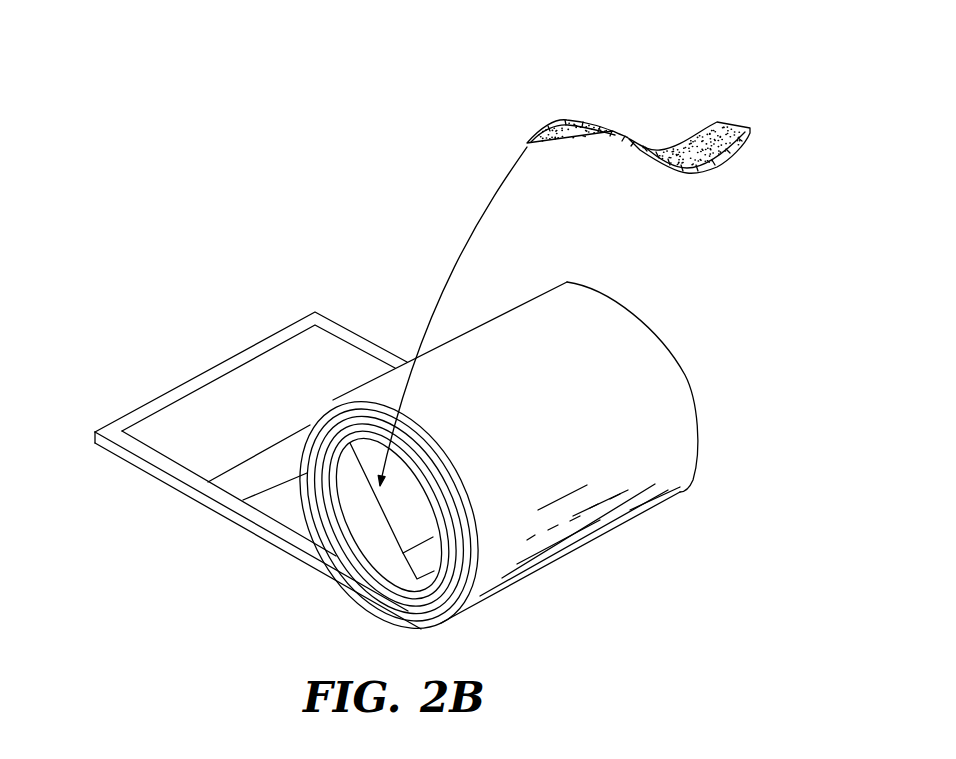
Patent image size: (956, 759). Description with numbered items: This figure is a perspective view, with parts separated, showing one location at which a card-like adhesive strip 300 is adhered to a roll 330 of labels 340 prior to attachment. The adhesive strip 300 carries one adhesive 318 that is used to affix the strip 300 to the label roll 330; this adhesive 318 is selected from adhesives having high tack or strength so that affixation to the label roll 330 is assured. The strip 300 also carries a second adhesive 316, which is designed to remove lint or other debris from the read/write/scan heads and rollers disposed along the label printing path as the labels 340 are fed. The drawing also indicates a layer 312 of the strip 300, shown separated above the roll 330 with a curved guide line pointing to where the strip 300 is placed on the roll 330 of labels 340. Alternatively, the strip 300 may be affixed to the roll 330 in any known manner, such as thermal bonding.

The adhesive strip 300 is at (620, 93).
The base layer 312 is at (713, 163).
The second adhesive 316 is at (707, 127).
The adhesive 318 is at (577, 138).
The roll 330 is at (703, 310).
The labels 340 is at (190, 453).